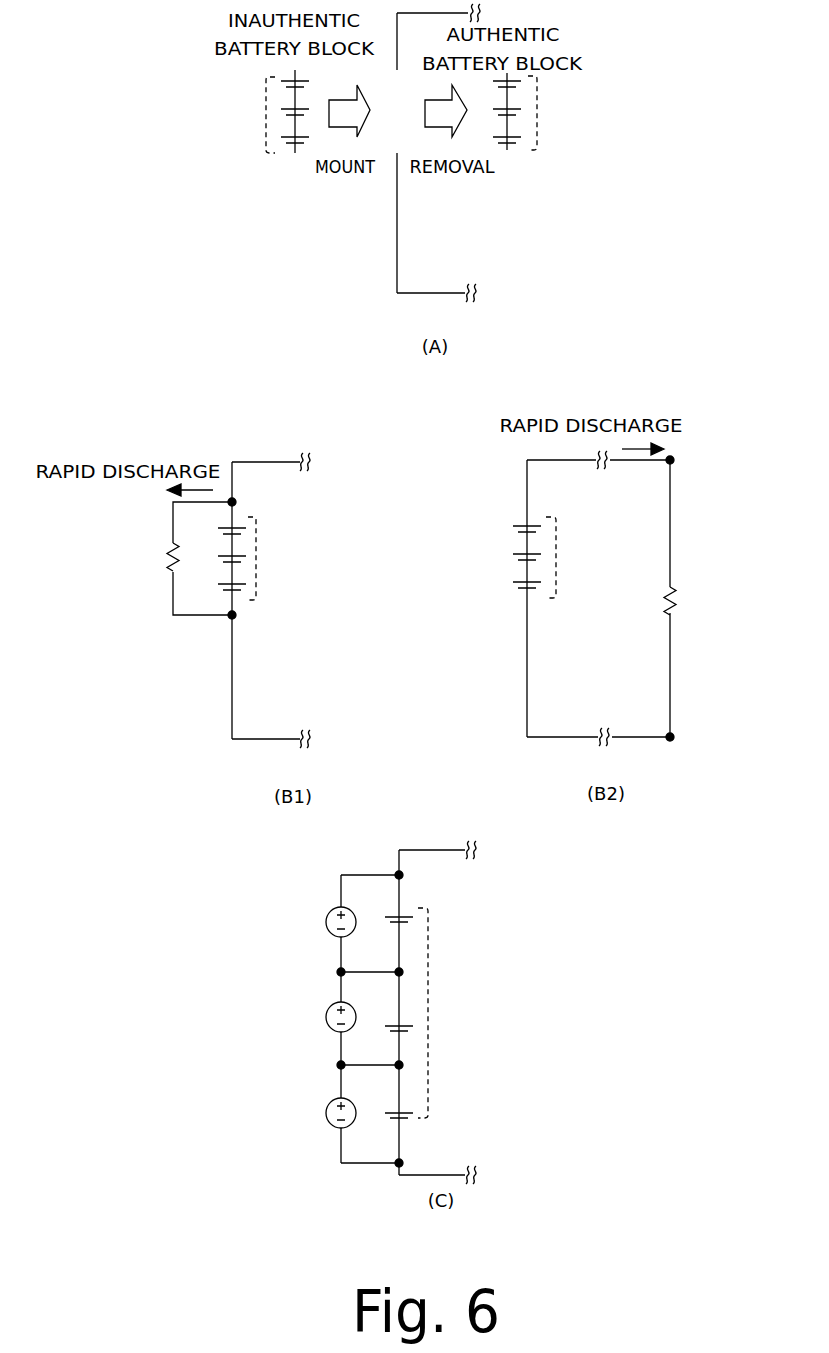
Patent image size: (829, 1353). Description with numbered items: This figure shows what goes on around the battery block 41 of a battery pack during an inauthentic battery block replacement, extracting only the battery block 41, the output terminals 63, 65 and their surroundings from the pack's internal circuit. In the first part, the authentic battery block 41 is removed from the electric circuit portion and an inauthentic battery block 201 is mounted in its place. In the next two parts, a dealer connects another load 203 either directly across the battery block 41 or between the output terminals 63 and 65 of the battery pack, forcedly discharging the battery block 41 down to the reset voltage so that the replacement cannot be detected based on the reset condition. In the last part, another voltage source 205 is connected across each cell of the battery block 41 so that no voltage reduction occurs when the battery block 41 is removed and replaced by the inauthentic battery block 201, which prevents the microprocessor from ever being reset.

The inauthentic battery block 201 is at (265, 113).
The battery block 41 is at (538, 108).
The load 203 is at (173, 573).
The output terminal 63 is at (673, 457).
The output terminal 65 is at (675, 740).
The voltage source 205 is at (332, 1100).